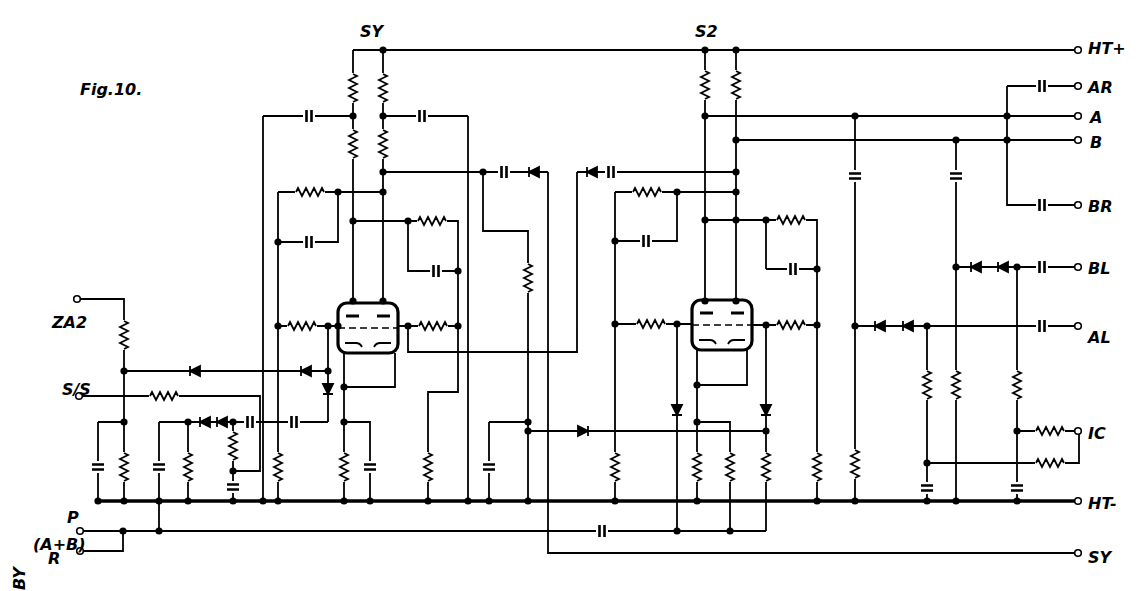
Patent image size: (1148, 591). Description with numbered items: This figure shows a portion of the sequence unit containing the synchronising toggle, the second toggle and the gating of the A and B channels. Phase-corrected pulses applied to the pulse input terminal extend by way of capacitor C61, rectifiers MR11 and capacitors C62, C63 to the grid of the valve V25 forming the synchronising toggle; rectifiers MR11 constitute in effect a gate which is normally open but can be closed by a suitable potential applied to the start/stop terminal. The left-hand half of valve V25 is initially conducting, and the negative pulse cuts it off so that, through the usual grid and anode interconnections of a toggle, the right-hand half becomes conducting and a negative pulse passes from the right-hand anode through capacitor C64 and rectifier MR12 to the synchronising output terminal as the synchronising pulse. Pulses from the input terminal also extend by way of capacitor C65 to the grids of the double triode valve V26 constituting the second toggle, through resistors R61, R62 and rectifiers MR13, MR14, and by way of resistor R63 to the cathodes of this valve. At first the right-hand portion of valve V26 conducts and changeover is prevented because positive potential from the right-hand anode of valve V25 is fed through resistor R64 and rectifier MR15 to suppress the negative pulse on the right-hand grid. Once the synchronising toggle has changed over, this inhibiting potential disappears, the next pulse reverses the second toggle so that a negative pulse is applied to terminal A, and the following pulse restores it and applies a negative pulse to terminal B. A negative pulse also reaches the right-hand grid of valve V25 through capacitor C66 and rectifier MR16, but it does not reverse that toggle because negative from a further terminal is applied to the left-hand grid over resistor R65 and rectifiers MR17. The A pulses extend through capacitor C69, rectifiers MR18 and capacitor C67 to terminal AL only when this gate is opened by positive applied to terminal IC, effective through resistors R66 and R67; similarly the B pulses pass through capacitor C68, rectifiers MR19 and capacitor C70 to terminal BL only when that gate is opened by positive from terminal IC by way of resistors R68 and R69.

The resistor R65 is at (142, 335).
The rectifiers MR17 is at (262, 359).
The rectifiers MR11 is at (222, 412).
The capacitor C61 is at (147, 456).
The capacitor C62 is at (250, 421).
The capacitor C63 is at (306, 430).
The valve V25 is at (355, 317).
The resistor R64 is at (510, 278).
The capacitor C64 is at (504, 162).
The rectifier MR12 is at (534, 165).
The rectifier MR16 is at (591, 165).
The capacitor C66 is at (633, 162).
The rectifier MR15 is at (587, 423).
The rectifier MR13 is at (654, 409).
The resistor R61 is at (638, 467).
The resistor R63 is at (708, 469).
The rectifier MR14 is at (792, 409).
The resistor R62 is at (784, 467).
The double triode valve V26 is at (709, 316).
The capacitor C69 is at (875, 176).
The capacitor C68 is at (976, 176).
The rectifiers MR19 is at (990, 256).
The capacitor C70 is at (1058, 257).
The rectifiers MR18 is at (895, 317).
The capacitor C67 is at (1061, 318).
The resistor R67 is at (907, 388).
The resistor R69 is at (1035, 388).
The resistor R68 is at (1054, 424).
The resistor R66 is at (1049, 457).
The capacitor C65 is at (585, 526).